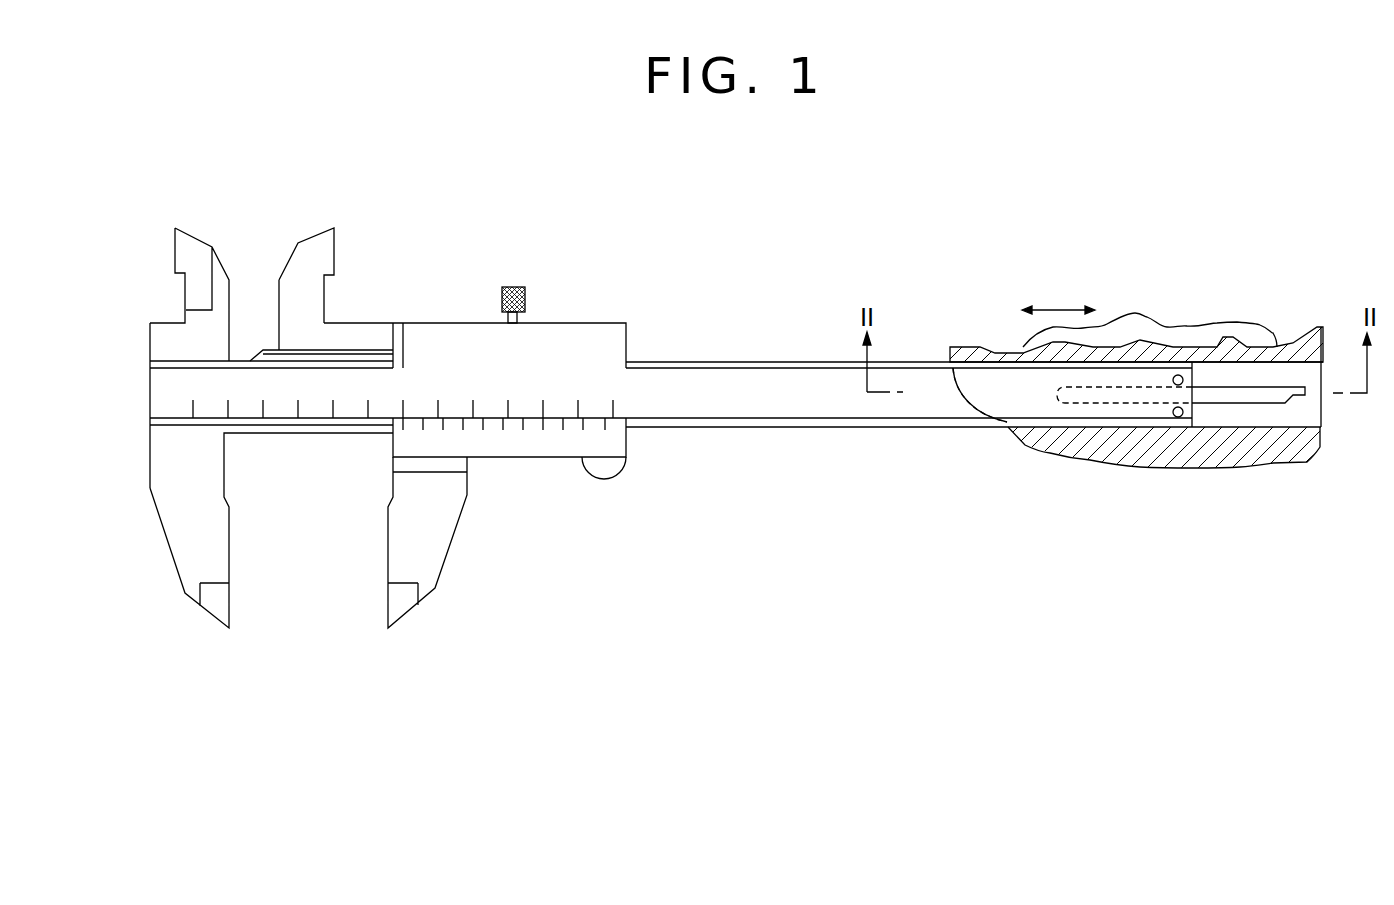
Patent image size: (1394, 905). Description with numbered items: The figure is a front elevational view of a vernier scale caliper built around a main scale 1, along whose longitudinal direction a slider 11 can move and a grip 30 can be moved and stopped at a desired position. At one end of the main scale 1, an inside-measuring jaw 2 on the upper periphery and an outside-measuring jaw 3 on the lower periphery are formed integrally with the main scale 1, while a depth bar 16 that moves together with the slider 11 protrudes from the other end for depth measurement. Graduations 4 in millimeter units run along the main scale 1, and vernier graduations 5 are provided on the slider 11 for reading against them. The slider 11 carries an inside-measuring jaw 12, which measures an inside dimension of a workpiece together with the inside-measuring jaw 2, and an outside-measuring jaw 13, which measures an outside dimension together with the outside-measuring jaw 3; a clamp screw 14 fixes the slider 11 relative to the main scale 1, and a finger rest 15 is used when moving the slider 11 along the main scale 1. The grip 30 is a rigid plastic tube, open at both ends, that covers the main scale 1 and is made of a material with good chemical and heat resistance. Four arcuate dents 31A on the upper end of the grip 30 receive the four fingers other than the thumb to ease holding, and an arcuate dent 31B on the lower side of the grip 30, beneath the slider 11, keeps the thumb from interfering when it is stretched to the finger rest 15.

The main scale 1 is at (157, 383).
The inside-measuring jaw 2 is at (192, 245).
The outside-measuring jaw 3 is at (217, 607).
The graduations 4 is at (187, 408).
The vernier graduations 5 is at (618, 427).
The slider 11 is at (453, 343).
The inside-measuring jaw 12 is at (320, 243).
The outside-measuring jaw 13 is at (403, 607).
The clamp screw 14 is at (525, 298).
The finger rest 15 is at (602, 472).
The depth bar 16 is at (1242, 397).
The grip 30 is at (1136, 373).
The arcuate dents 31A is at (1136, 323).
The arcuate dent 31B is at (1017, 432).